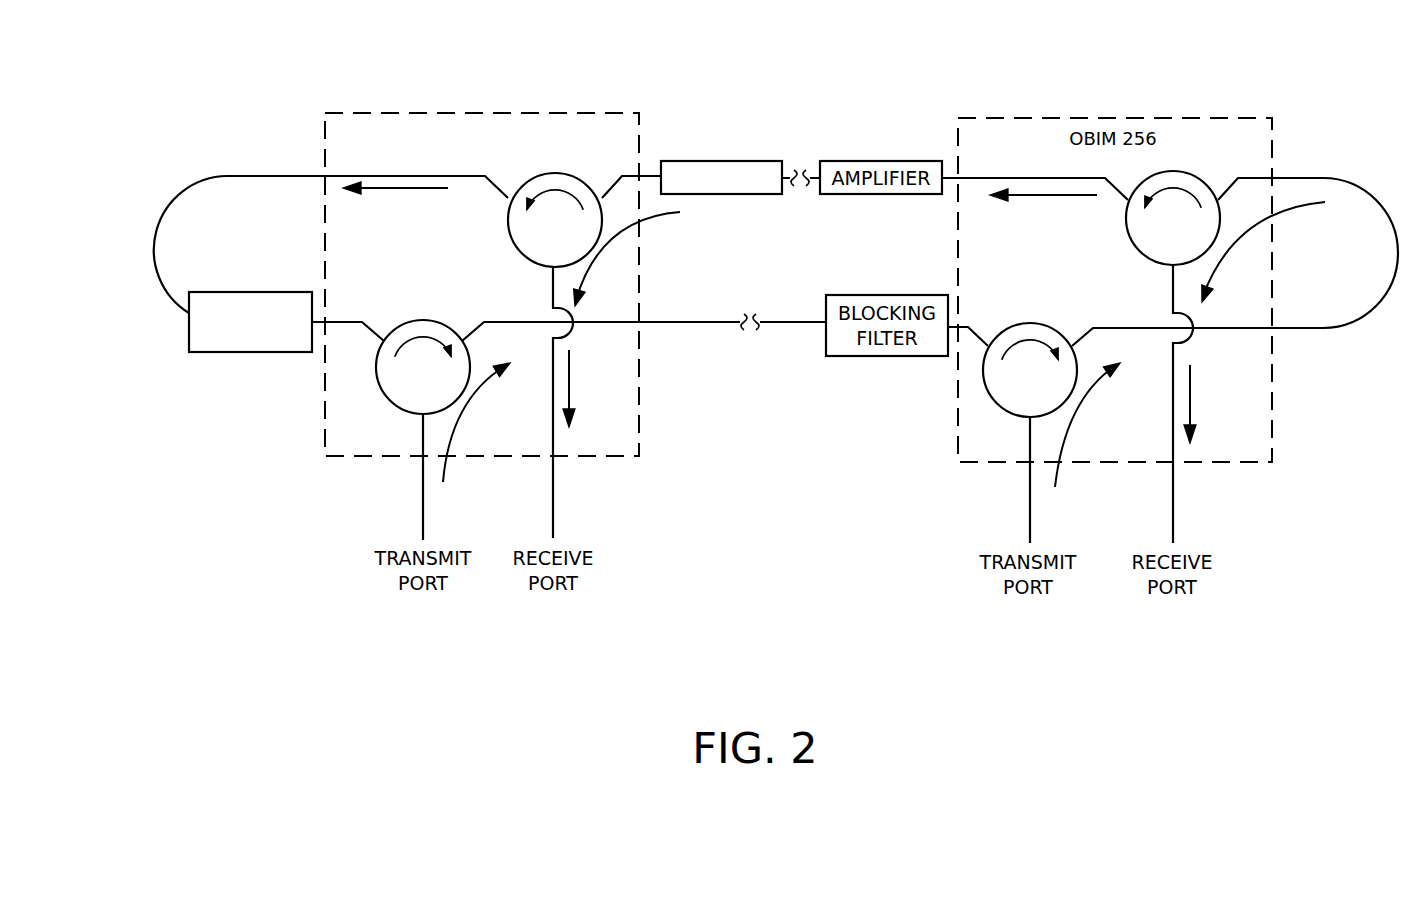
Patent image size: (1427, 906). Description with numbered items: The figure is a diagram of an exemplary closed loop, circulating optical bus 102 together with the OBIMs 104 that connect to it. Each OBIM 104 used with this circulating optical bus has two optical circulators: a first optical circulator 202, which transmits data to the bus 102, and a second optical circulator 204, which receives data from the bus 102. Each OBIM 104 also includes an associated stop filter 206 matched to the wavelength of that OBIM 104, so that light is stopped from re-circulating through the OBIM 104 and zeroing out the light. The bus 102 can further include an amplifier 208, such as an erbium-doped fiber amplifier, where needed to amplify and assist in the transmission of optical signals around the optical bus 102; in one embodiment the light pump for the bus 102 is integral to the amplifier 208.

The circulating optical bus 102 is at (155, 225).
The OBIM 104 is at (553, 112).
The first optical circulator 202 is at (423, 367).
The second optical circulator 204 is at (555, 220).
The stop filter 206 is at (224, 292).
The amplifier 208 is at (722, 161).